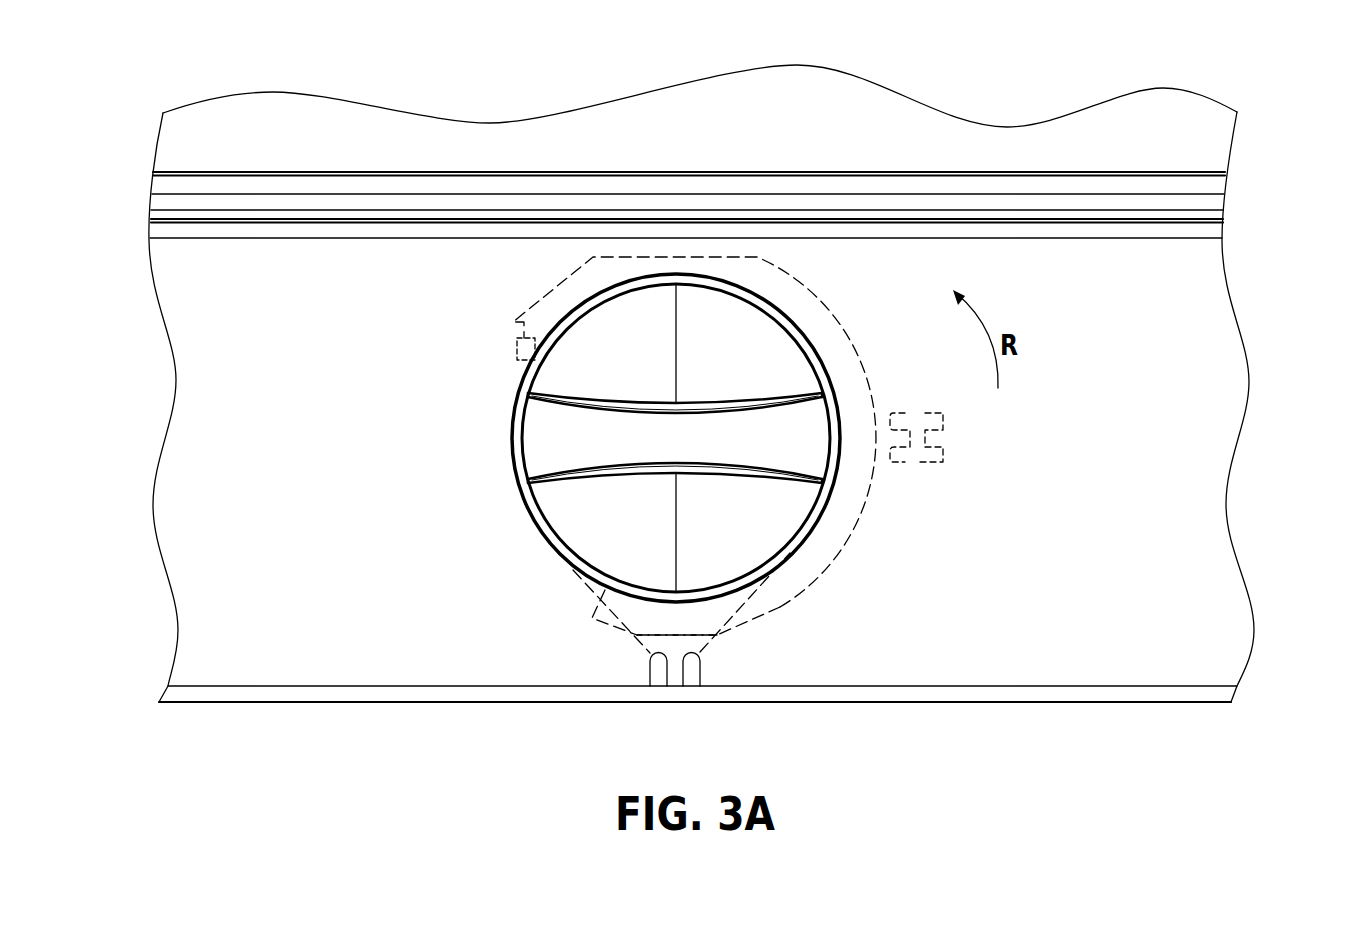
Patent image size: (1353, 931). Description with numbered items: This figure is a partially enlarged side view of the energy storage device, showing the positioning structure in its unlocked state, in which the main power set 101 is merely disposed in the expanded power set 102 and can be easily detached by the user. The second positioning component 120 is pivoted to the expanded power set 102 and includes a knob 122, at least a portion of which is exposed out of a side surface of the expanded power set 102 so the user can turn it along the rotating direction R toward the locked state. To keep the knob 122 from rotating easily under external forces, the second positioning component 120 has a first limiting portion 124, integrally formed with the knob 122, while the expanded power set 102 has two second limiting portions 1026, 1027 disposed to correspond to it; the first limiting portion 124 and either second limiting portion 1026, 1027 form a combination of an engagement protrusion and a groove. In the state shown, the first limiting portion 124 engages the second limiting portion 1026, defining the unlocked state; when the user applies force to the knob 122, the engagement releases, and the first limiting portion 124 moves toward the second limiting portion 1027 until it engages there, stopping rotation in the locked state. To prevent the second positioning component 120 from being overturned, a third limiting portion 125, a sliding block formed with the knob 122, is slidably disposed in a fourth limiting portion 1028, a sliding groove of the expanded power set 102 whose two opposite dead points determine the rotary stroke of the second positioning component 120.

The main power set 101 is at (870, 102).
The expanded power set 102 is at (1210, 607).
The second positioning component 120 is at (694, 455).
The knob 122 is at (643, 337).
The first limiting portion 124 is at (675, 655).
The third limiting portion 125 is at (517, 345).
The second limiting portion 1026 is at (700, 672).
The second limiting portion 1027 is at (928, 465).
The fourth limiting portion 1028 is at (587, 598).